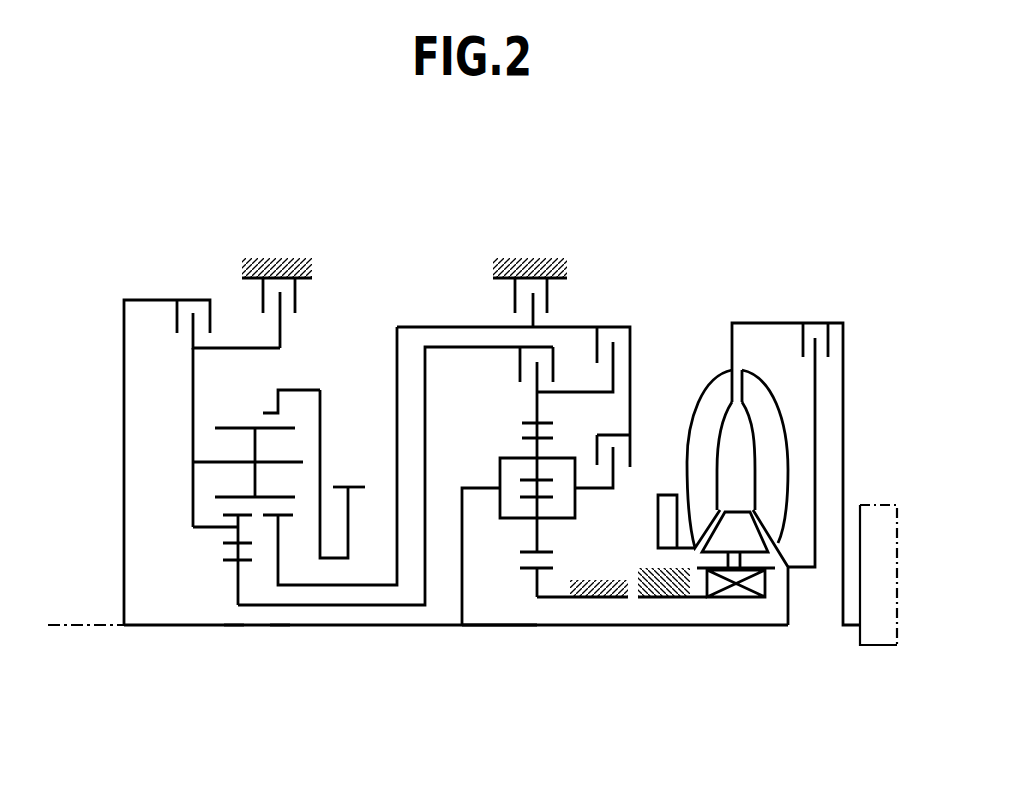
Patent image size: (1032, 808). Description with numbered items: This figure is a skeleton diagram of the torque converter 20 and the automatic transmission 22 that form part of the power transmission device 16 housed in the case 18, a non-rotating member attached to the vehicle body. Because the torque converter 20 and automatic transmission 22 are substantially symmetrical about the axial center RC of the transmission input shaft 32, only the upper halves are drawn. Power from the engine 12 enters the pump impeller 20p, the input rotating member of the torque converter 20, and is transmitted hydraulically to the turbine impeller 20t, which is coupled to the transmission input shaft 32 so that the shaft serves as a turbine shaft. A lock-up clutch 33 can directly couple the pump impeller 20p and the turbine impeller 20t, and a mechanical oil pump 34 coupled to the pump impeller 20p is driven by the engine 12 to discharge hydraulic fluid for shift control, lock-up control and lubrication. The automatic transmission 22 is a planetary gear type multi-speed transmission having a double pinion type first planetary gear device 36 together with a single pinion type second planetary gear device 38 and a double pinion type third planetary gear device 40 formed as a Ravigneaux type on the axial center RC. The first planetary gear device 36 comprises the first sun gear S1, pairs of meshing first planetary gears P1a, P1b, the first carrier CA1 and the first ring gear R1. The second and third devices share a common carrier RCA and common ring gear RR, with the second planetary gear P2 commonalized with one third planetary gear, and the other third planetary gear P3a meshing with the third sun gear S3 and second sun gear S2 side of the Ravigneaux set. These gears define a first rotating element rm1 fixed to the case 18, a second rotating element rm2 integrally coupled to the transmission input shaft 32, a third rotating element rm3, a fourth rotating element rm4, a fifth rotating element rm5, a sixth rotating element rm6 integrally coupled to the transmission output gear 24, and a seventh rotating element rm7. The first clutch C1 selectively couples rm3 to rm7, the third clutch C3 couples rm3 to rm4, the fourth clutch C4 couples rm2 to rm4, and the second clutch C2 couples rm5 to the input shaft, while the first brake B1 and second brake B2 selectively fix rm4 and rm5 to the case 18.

The power transmission device 16 is at (708, 204).
The automatic transmission 22 is at (197, 255).
The case 18 is at (283, 268).
The torque converter 20 is at (761, 309).
The pump impeller 20p is at (697, 475).
The turbine impeller 20t is at (770, 451).
The lock-up clutch 33 is at (796, 339).
The oil pump 34 is at (658, 520).
The engine 12 is at (873, 516).
The transmission output gear 24 is at (355, 486).
The transmission input shaft 32 is at (622, 628).
The first planetary gear device 36 is at (534, 637).
The second planetary gear device 38 is at (280, 639).
The third planetary gear device 40 is at (234, 639).
The axial center RC is at (67, 626).
The first rotating element rm1 is at (559, 603).
The second rotating element rm2 is at (479, 480).
The third rotating element rm3 is at (576, 386).
The fourth rotating element rm4 is at (426, 321).
The fifth rotating element rm5 is at (184, 519).
The sixth rotating element rm6 is at (333, 408).
The seventh rotating element rm7 is at (343, 612).
The first clutch C1 is at (520, 364).
The second clutch C2 is at (202, 451).
The third clutch C3 is at (582, 347).
The fourth clutch C4 is at (602, 448).
The first brake B1 is at (527, 302).
The second brake B2 is at (284, 313).
The first sun gear S1 is at (527, 562).
The second sun gear S2 is at (287, 513).
The third sun gear S3 is at (233, 559).
The first ring gear R1 is at (570, 420).
The ring gear RR is at (293, 419).
The first carrier CA1 is at (498, 503).
The carrier RCA is at (192, 480).
The first planetary gear P1a is at (570, 558).
The first planetary gear P1b is at (527, 423).
The second planetary gear P2 is at (237, 427).
The third planetary gear P3a is at (233, 514).